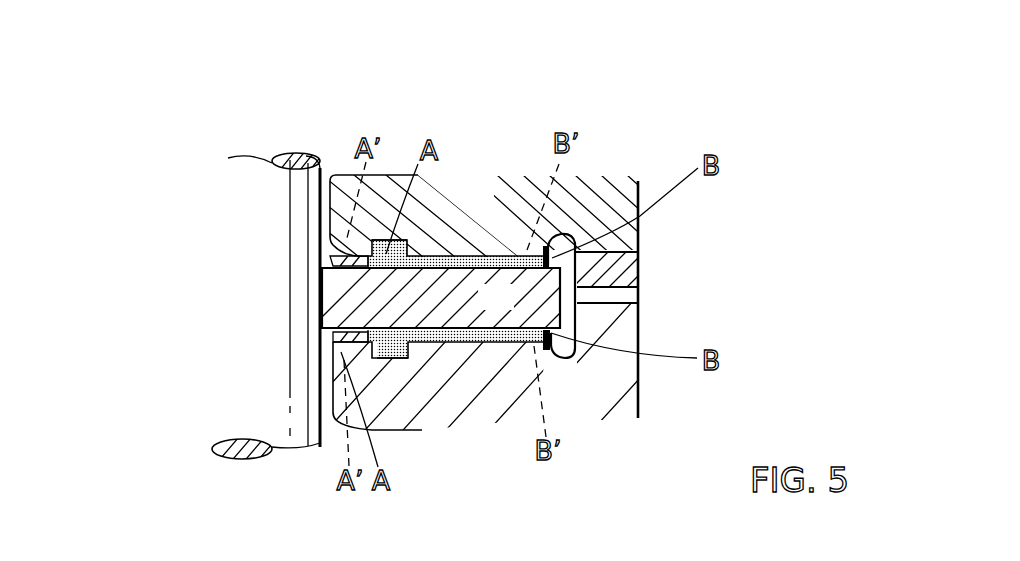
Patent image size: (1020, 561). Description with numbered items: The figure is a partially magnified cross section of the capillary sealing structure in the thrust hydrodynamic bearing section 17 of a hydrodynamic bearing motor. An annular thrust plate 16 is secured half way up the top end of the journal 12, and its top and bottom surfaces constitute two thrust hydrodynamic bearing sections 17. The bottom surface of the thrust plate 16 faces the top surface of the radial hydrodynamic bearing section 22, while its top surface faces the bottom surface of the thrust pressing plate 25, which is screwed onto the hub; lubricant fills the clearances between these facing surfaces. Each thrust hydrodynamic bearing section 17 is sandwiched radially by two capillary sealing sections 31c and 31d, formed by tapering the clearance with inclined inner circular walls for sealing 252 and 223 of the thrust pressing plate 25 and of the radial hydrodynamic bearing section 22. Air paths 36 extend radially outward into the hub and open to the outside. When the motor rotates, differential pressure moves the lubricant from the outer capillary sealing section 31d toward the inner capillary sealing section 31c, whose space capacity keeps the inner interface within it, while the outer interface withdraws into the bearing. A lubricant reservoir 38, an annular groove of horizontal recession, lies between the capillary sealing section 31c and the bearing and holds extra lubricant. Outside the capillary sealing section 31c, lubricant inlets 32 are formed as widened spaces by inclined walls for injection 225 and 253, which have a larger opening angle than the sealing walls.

The journal 12 is at (300, 292).
The thrust plate 16 is at (494, 266).
The thrust hydrodynamic bearing section 17 is at (480, 310).
The radial hydrodynamic bearing section 22 is at (425, 404).
The thrust pressing plate 25 is at (612, 182).
The capillary sealing section 31c is at (340, 260).
The capillary sealing section 31d is at (574, 238).
The lubricant inlet 32 is at (330, 250).
The air path 36 is at (597, 294).
The lubricant reservoir 38 is at (420, 206).
The inclined inner circular wall for sealing 223 is at (360, 356).
The inclined wall for injection 225 is at (342, 348).
The inclined inner circular wall for sealing 252 is at (354, 246).
The inclined wall for injection 253 is at (344, 252).